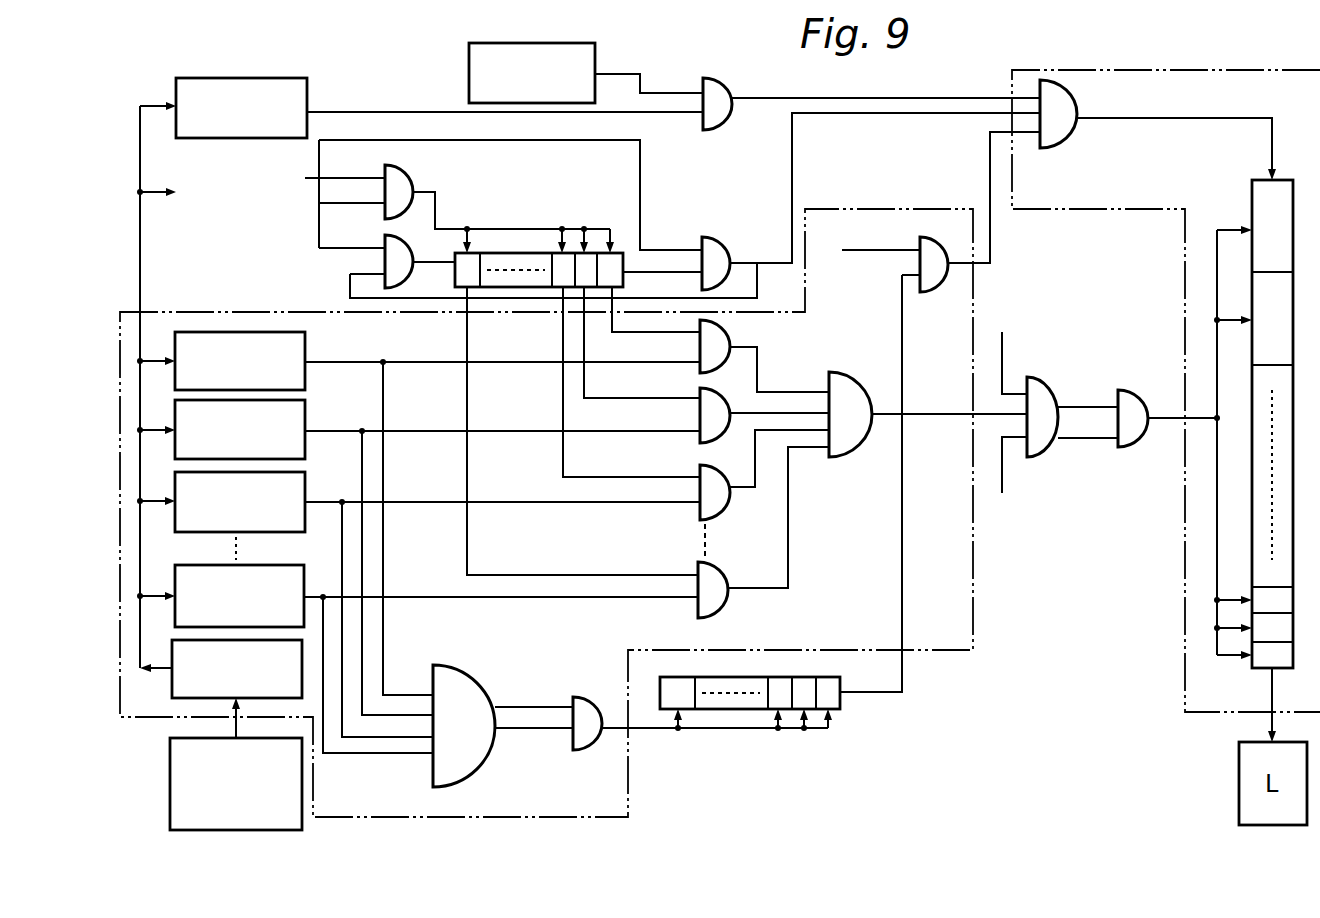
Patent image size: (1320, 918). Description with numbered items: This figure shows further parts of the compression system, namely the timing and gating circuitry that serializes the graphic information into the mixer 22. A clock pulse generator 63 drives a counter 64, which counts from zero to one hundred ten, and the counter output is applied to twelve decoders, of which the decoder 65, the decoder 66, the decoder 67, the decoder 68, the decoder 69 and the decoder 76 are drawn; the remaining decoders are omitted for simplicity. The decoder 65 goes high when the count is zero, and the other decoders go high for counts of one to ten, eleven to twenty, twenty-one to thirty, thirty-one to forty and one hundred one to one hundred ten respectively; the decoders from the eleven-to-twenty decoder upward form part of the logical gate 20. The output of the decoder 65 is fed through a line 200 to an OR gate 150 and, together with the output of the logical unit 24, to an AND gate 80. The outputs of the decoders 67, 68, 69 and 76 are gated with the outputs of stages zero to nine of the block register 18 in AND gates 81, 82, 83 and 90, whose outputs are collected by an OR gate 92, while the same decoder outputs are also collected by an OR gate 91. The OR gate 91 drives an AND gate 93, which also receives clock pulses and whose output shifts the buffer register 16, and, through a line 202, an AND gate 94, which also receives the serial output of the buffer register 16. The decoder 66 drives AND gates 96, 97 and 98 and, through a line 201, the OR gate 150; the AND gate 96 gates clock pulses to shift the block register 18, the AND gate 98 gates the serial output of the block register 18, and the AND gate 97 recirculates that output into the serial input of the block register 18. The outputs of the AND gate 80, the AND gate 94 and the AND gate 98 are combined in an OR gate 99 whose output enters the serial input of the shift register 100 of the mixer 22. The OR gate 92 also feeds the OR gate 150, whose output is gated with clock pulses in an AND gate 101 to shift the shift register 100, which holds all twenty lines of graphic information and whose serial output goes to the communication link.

The buffer register 16 is at (840, 700).
The block register 18 is at (515, 253).
The logical gate 20 is at (973, 633).
The mixer 22 is at (1185, 645).
The logical unit 24 is at (597, 54).
The clock pulse generator 63 is at (170, 764).
The counter 64 is at (172, 650).
The decoder 65 is at (280, 78).
The decoder 66 is at (190, 161).
The decoder 67 is at (305, 338).
The decoder 68 is at (305, 406).
The decoder 69 is at (305, 478).
The decoder 76 is at (304, 571).
The AND gate 80 is at (728, 88).
The AND gate 81 is at (726, 330).
The AND gate 82 is at (740, 392).
The AND gate 83 is at (740, 470).
The AND gate 90 is at (724, 572).
The OR gate 91 is at (480, 686).
The OR gate 92 is at (850, 378).
The AND gate 93 is at (586, 698).
The AND gate 94 is at (945, 250).
The AND gate 96 is at (408, 178).
The AND gate 97 is at (408, 250).
The AND gate 98 is at (728, 248).
The OR gate 99 is at (1072, 106).
The shift register 100 is at (1255, 180).
The AND gate 101 is at (1152, 380).
The OR gate 150 is at (1045, 382).
The line 200 is at (350, 112).
The line 201 is at (326, 178).
The line 202 is at (900, 250).